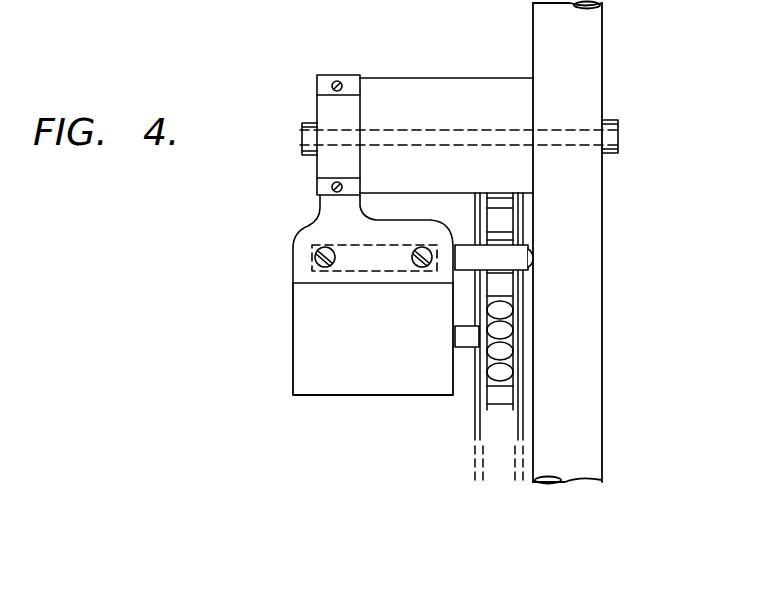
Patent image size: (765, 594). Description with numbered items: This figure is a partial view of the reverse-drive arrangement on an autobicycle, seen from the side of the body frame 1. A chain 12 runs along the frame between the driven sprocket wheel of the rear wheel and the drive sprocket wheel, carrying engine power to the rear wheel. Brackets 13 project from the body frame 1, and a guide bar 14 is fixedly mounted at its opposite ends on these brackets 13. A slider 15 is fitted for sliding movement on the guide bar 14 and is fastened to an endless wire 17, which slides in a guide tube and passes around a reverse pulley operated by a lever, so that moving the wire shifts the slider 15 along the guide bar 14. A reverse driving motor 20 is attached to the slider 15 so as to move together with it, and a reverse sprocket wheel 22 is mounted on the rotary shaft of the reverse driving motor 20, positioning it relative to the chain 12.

The body frame 1 is at (573, 72).
The chain 12 is at (497, 400).
The brackets 13 is at (470, 348).
The guide bar 14 is at (409, 262).
The slider 15 is at (292, 236).
The endless wire 17 is at (320, 186).
The reverse driving motor 20 is at (338, 373).
The reverse sprocket wheel 22 is at (503, 330).